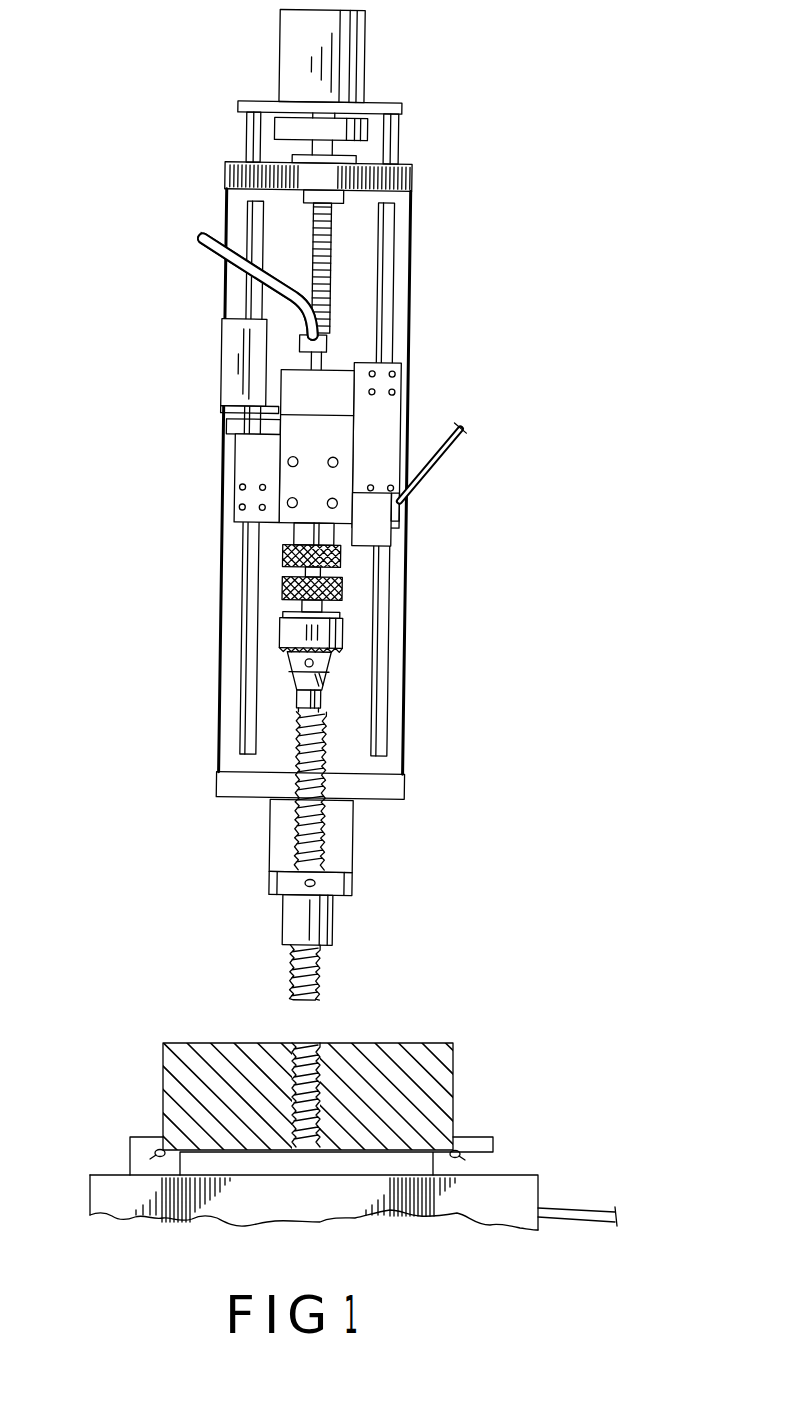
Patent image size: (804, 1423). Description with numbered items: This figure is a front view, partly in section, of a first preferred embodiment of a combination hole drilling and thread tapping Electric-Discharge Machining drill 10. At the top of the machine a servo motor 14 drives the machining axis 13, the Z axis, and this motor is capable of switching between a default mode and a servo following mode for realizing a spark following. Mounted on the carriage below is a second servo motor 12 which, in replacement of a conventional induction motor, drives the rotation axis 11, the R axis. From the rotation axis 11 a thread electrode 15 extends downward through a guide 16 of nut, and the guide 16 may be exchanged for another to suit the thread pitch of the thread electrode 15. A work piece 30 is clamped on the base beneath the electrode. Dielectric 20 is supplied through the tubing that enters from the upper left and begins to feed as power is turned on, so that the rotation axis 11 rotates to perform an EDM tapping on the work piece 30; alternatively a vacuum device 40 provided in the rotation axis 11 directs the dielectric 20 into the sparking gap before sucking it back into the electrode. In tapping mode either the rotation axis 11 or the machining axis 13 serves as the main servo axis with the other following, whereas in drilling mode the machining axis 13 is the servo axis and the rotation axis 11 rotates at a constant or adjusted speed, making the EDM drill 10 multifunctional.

The EDM drill 10 is at (108, 482).
The rotation axis 11 is at (283, 586).
The servo motor 12 is at (232, 371).
The machining axis 13 is at (336, 253).
The servo motor 14 is at (340, 70).
The thread electrode 15 is at (272, 826).
The guide 16 is at (290, 915).
The dielectric 20 is at (200, 244).
The vacuum device 40 is at (258, 286).
The work piece 30 is at (410, 1060).